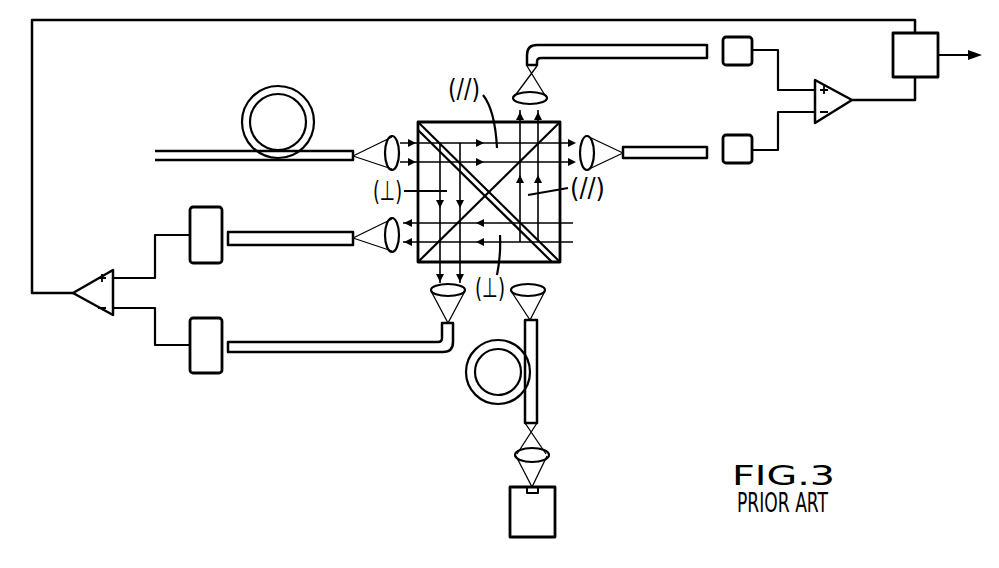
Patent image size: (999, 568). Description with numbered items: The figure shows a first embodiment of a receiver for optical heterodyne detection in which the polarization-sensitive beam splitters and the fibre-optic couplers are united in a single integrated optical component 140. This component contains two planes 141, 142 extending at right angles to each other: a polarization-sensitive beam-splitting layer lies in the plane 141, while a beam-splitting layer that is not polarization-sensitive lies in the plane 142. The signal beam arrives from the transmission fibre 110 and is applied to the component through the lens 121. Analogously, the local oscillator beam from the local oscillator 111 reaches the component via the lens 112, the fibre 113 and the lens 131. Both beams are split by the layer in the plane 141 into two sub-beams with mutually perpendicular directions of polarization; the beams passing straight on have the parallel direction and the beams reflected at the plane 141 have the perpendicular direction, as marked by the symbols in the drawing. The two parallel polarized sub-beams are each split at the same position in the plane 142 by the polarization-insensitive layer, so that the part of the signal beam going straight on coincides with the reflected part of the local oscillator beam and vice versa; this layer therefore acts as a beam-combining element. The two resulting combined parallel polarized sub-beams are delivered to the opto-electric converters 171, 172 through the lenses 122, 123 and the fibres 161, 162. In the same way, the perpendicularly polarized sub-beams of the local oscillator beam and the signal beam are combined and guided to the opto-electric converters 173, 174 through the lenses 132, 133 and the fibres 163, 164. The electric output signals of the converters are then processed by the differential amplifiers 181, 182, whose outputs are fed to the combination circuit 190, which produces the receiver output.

The transmission fibre 110 is at (207, 152).
The local oscillator 111 is at (545, 513).
The lens 112 is at (550, 455).
The fibre 113 is at (532, 357).
The lens 121 is at (392, 136).
The lens 122 is at (546, 98).
The lens 123 is at (588, 140).
The lens 131 is at (548, 292).
The lens 132 is at (391, 251).
The lens 133 is at (432, 290).
The integrated optical component 140 is at (441, 127).
The plane 141 is at (548, 238).
The plane 142 is at (486, 208).
The fibre 161 is at (666, 53).
The fibre 162 is at (675, 155).
The fibre 163 is at (283, 240).
The fibre 164 is at (305, 352).
The opto-electric converter 171 is at (755, 43).
The opto-electric converter 172 is at (740, 163).
The opto-electric converter 173 is at (195, 222).
The opto-electric converter 174 is at (197, 360).
The differential amplifier 181 is at (838, 108).
The differential amplifier 182 is at (90, 288).
The combination circuit 190 is at (940, 42).